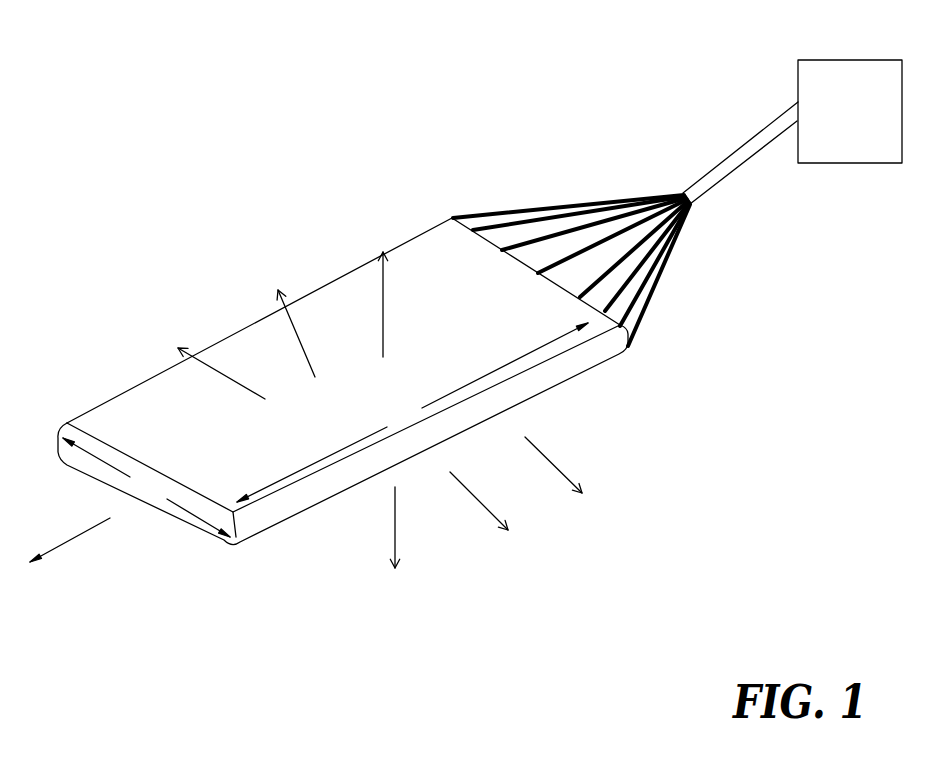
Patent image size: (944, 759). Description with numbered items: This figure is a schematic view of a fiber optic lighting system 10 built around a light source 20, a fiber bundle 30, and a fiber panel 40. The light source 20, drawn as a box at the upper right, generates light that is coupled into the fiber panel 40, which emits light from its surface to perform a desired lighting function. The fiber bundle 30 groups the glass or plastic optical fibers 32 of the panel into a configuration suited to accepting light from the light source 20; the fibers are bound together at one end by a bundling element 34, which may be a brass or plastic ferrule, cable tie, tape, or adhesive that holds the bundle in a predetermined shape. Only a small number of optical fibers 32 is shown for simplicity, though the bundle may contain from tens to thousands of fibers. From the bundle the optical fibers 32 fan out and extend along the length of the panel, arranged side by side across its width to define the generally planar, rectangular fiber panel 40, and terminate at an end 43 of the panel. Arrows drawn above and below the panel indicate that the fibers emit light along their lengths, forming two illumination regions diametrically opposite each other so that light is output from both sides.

The lighting system 10 is at (160, 130).
The light source 20 is at (838, 151).
The fiber bundle 30 is at (560, 173).
The optical fibers 32 is at (647, 307).
The bundling element 34 is at (740, 170).
The fiber panel 40 is at (425, 255).
The end of the panel 43 is at (68, 423).